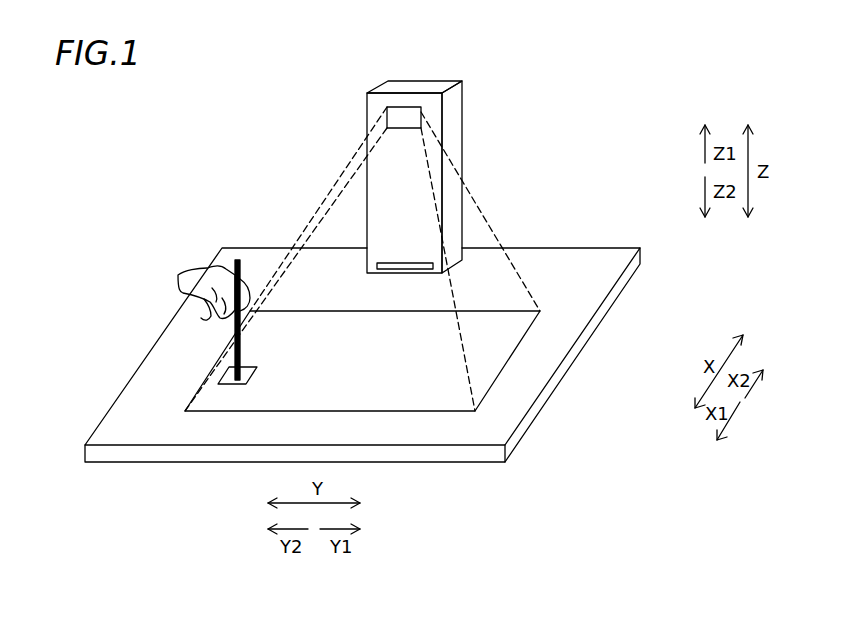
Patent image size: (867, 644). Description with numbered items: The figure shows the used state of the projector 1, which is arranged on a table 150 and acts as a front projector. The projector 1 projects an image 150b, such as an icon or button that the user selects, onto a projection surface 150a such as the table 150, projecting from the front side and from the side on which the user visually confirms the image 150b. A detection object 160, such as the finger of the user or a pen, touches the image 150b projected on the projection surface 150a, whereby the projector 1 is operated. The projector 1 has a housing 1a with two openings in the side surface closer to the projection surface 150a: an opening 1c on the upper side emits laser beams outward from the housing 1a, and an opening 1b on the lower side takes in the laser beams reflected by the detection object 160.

The projector 1 is at (445, 189).
The housing 1a is at (462, 130).
The opening 1b is at (394, 267).
The opening 1c is at (403, 107).
The table 150 is at (588, 302).
The projection surface 150a is at (495, 350).
The image 150b is at (237, 386).
The detection object 160 is at (240, 266).